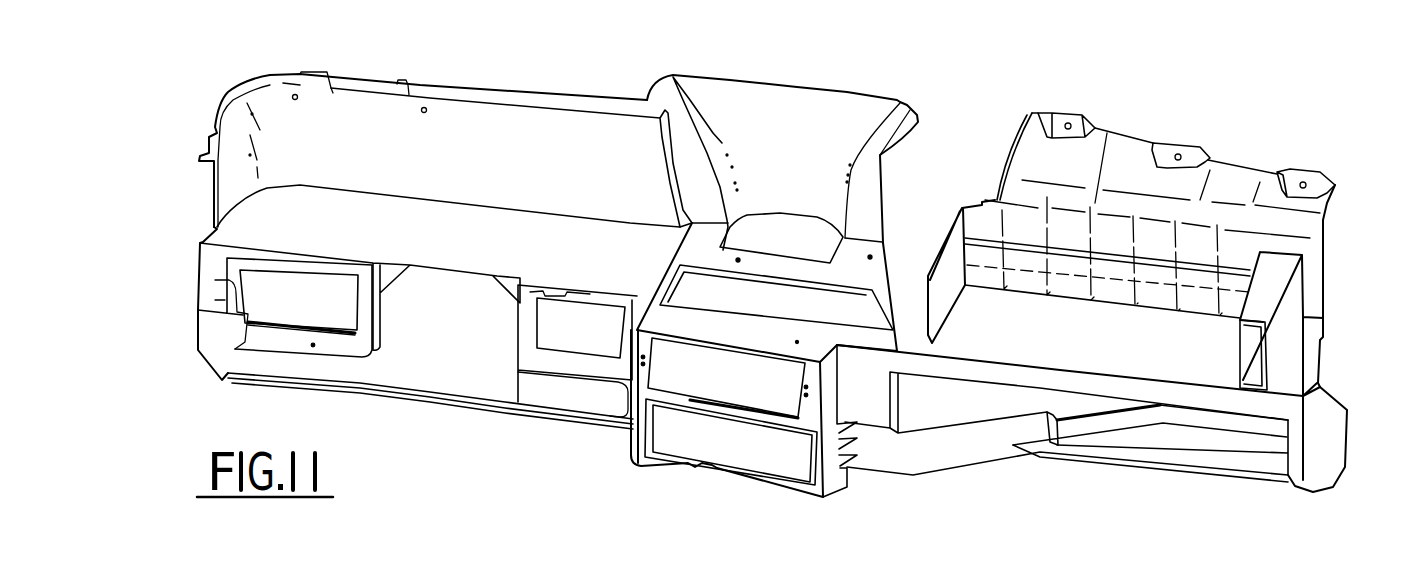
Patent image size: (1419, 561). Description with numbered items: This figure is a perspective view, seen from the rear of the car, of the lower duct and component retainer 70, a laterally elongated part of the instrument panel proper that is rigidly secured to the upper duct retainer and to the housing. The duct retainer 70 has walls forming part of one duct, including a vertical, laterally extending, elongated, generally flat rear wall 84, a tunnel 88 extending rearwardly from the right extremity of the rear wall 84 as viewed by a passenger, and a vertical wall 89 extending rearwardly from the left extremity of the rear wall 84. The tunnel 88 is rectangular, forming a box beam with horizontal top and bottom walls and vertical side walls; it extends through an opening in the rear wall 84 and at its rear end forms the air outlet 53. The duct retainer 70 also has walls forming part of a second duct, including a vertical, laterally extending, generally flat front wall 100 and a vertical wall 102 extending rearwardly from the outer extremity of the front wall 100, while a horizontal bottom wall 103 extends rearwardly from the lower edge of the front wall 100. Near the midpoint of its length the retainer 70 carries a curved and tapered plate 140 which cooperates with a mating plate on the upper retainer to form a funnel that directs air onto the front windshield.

The front wall 100 is at (502, 120).
The vertical wall 102 is at (240, 140).
The horizontal bottom wall 103 is at (275, 210).
The curved and tapered plate 140 is at (807, 107).
The vertical wall 89 is at (947, 256).
The rear wall 84 is at (1232, 253).
The lower duct and component retainer 70 is at (1340, 298).
The tunnel 88 is at (1290, 325).
The air outlet 53 is at (1257, 378).